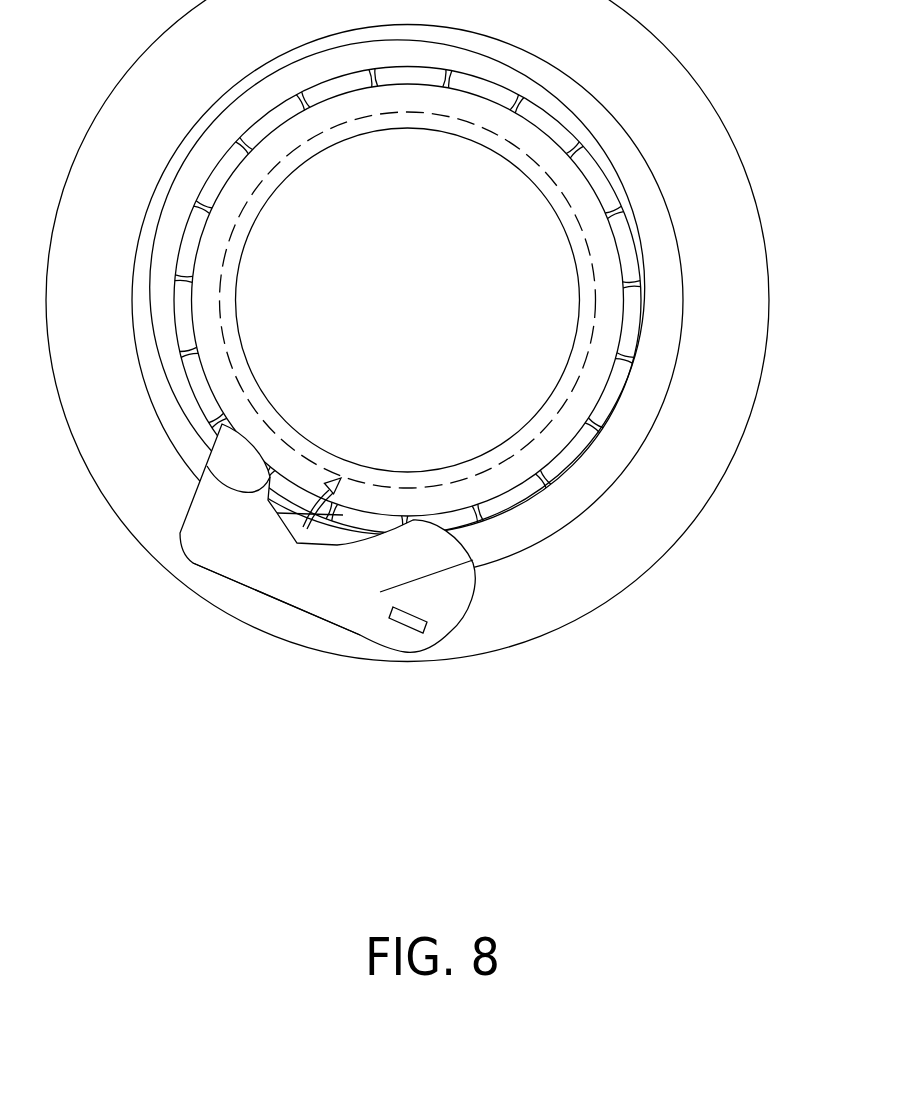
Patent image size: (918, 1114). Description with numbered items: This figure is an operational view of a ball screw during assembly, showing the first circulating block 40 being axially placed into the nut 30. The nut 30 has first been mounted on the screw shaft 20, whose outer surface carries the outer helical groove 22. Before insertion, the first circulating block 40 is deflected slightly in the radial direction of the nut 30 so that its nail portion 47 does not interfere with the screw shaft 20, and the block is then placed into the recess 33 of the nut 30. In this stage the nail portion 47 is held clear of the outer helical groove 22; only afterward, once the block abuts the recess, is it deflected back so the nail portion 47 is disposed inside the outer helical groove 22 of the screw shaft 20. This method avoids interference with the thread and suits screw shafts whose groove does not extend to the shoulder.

The nut 30 is at (683, 505).
The screw shaft 20 is at (510, 395).
The outer helical groove 22 is at (498, 474).
The first circulating block 40 is at (368, 579).
The recess 33 is at (298, 597).
The nail portion 47 is at (290, 527).